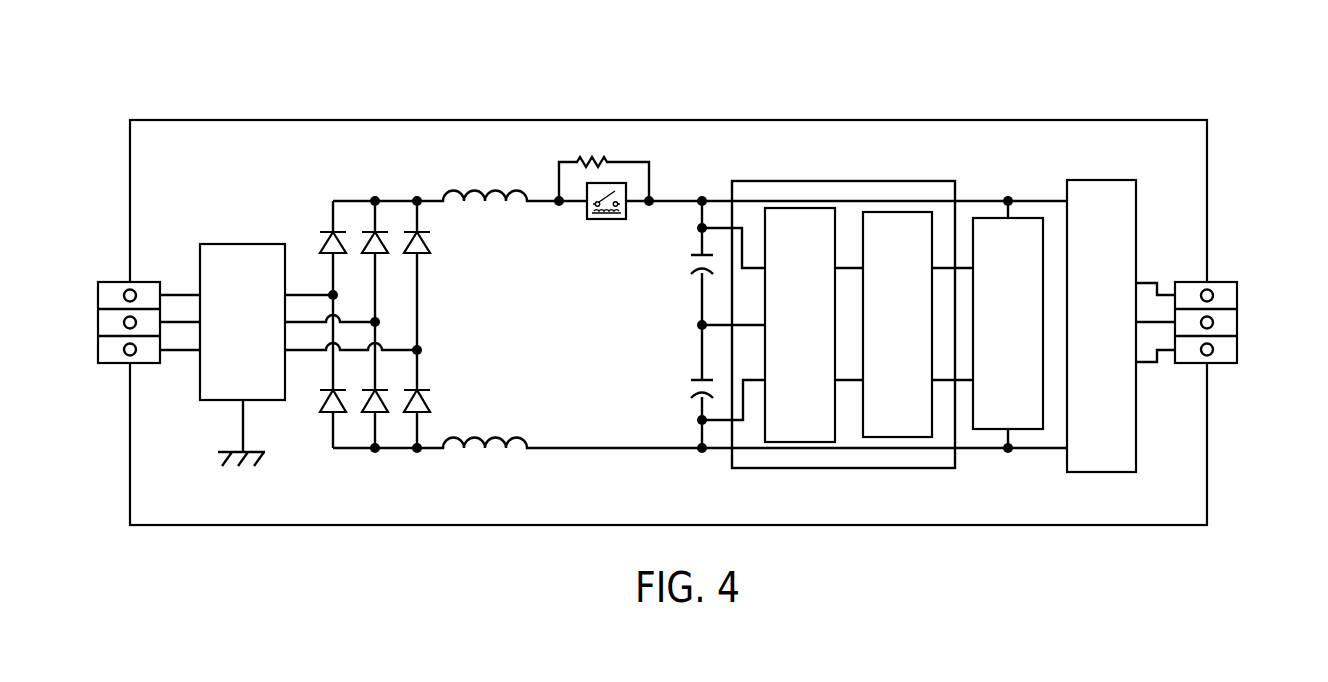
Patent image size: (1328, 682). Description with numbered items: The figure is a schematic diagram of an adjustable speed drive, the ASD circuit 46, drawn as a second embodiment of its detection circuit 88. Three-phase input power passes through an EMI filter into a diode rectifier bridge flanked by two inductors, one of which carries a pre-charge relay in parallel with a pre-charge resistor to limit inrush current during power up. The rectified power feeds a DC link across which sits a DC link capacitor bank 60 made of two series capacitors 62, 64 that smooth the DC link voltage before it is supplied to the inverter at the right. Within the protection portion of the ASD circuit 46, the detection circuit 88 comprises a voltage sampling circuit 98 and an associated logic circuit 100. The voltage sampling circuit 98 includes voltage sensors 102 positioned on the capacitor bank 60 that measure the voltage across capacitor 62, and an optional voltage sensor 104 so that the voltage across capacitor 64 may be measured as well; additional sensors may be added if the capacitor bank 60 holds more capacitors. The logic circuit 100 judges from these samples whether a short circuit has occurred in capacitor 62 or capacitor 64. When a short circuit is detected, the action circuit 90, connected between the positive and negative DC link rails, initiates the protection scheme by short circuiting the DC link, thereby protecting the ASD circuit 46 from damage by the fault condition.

The ASD circuit 46 is at (677, 266).
The detection circuit 88 is at (929, 295).
The voltage sampling circuit 98 is at (802, 207).
The logic circuit 100 is at (897, 437).
The action circuit 90 is at (1026, 205).
The DC link capacitor bank 60 is at (670, 324).
The capacitor 62 is at (692, 263).
The capacitor 64 is at (692, 388).
The voltage sensors 102 is at (700, 228).
The voltage sensor 104 is at (698, 423).